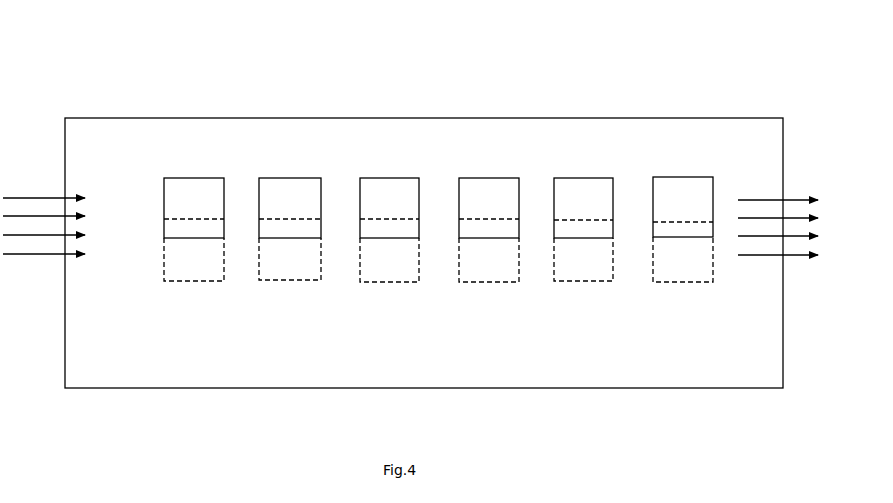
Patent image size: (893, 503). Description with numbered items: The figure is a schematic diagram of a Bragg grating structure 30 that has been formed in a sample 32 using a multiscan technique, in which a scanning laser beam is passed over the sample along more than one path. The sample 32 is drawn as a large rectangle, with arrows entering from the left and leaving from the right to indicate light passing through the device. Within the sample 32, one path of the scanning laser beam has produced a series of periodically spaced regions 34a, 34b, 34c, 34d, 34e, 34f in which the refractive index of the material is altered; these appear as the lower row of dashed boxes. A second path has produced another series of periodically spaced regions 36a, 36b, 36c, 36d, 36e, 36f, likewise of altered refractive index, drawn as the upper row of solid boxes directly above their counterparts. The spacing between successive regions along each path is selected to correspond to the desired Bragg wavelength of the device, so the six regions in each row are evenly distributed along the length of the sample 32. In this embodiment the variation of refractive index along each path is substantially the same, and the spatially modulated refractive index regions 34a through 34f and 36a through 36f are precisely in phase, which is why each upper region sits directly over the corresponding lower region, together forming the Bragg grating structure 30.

The Bragg grating structure 30 is at (312, 133).
The sample 32 is at (155, 388).
The periodically spaced region 34a is at (193, 280).
The periodically spaced region 34b is at (292, 279).
The periodically spaced region 34c is at (389, 282).
The periodically spaced region 34d is at (491, 282).
The periodically spaced region 34e is at (585, 281).
The periodically spaced region 34f is at (687, 282).
The periodically spaced region 36a is at (198, 177).
The periodically spaced region 36b is at (285, 178).
The periodically spaced region 36c is at (392, 178).
The periodically spaced region 36d is at (485, 178).
The periodically spaced region 36e is at (583, 178).
The periodically spaced region 36f is at (678, 177).